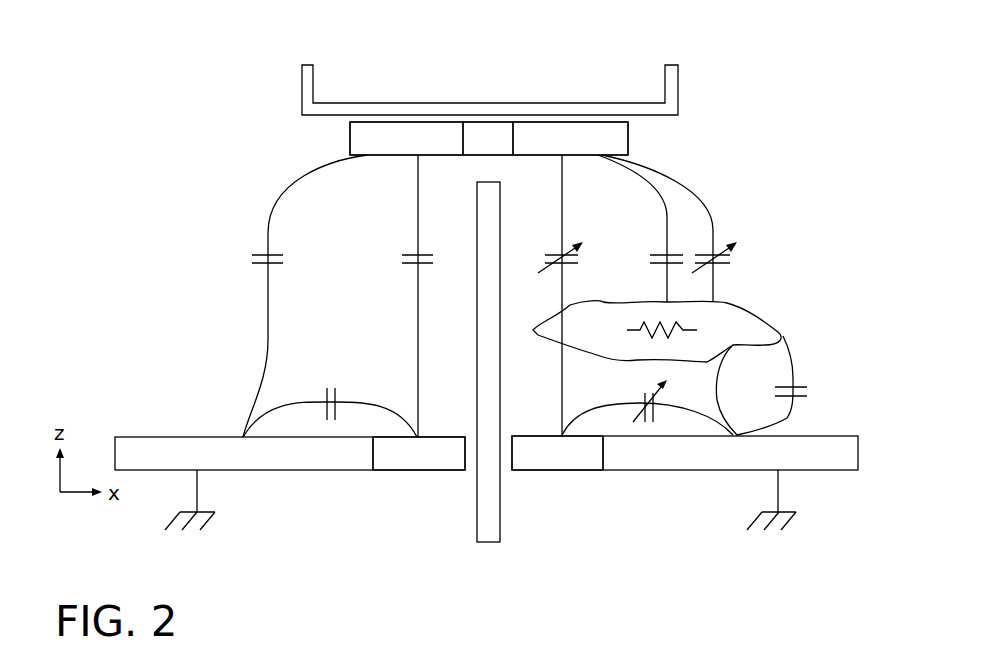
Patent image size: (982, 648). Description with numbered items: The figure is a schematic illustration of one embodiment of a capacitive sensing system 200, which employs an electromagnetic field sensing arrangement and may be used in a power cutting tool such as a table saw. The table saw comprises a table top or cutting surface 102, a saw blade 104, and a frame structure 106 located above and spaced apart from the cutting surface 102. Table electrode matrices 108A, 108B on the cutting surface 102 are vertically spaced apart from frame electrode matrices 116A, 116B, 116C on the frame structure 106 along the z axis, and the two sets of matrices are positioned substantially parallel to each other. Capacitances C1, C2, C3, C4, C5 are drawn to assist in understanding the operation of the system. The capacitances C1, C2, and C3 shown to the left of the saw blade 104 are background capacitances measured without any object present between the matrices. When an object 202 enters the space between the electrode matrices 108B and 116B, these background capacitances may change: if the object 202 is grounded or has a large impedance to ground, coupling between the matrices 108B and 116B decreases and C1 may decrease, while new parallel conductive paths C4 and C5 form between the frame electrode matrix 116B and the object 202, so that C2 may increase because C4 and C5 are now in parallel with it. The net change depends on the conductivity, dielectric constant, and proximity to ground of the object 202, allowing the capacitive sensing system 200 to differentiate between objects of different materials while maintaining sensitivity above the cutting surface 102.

The capacitive sensing system 200 is at (542, 63).
The frame structure 106 is at (697, 93).
The frame electrode matrix 116A is at (350, 142).
The frame electrode matrix 116B is at (628, 140).
The frame electrode matrix 116C is at (480, 155).
The saw blade 104 is at (477, 543).
The cutting surface 102 is at (198, 437).
The table electrode matrix 108A is at (393, 470).
The table electrode matrix 108B is at (572, 470).
The object 202 is at (753, 315).
The capacitance C1 is at (397, 296).
The capacitance C2 is at (569, 296).
The capacitance C3 is at (488, 397).
The capacitance C4 is at (640, 228).
The capacitance C5 is at (778, 378).